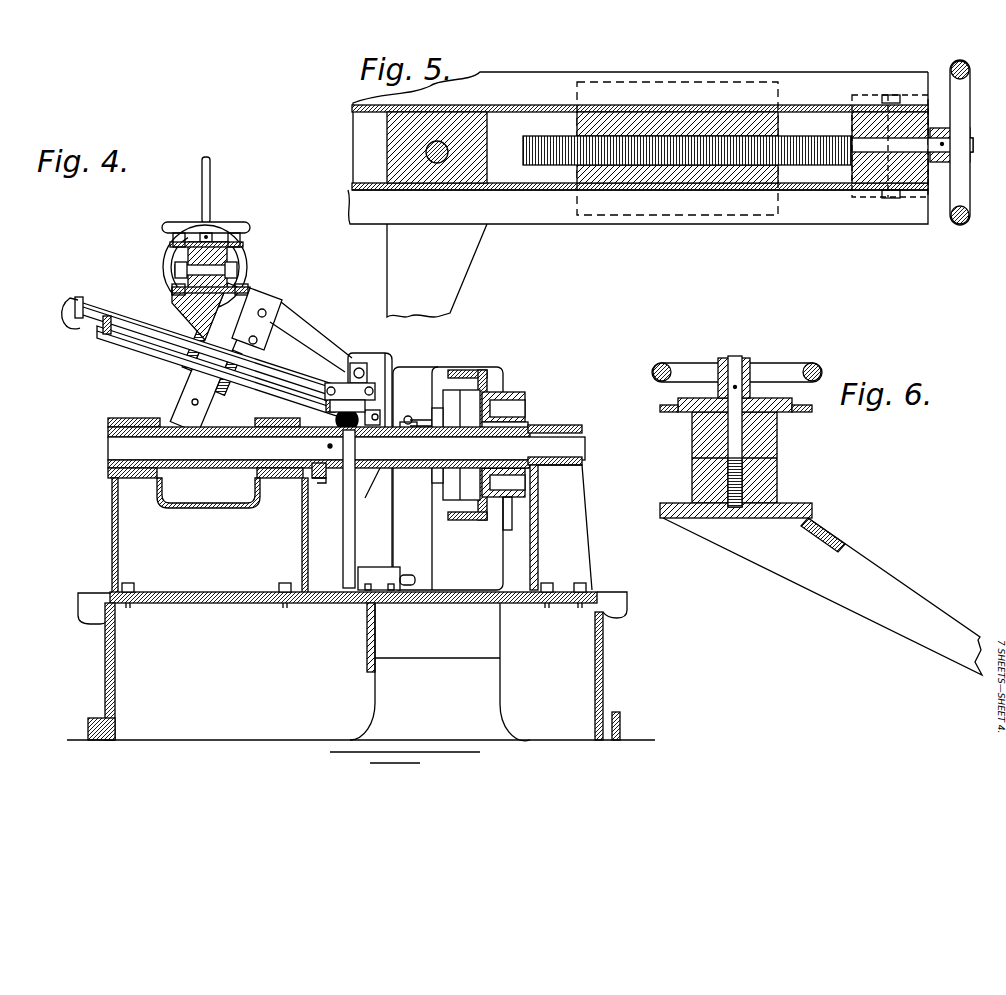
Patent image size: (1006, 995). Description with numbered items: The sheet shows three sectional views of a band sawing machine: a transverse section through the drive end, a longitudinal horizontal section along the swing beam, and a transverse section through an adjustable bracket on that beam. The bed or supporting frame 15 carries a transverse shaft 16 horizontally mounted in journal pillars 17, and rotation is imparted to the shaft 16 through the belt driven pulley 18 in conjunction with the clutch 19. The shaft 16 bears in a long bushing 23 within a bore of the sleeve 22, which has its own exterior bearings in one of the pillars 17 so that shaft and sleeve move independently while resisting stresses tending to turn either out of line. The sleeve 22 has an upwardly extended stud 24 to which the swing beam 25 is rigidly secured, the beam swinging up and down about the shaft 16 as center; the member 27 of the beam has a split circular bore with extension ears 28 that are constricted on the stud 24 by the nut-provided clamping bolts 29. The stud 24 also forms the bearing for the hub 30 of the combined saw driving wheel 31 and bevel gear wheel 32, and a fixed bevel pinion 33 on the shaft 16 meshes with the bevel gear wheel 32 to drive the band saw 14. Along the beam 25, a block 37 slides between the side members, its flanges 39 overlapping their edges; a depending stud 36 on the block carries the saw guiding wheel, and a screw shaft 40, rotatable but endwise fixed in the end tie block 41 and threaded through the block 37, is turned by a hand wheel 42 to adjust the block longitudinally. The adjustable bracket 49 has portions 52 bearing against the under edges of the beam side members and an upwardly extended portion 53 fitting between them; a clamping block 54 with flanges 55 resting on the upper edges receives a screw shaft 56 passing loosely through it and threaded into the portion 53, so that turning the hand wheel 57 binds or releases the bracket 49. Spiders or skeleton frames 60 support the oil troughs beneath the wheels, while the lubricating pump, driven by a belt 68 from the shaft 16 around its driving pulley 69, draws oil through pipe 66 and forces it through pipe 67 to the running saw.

In FIG. 4, the band saw 14 is at (73, 317).
In FIG. 4, the bed or supporting frame 15 is at (250, 601).
In FIG. 4, the transverse shaft 16 is at (346, 448).
In FIG. 4, the journal supports or pillars 17 is at (126, 478).
In FIG. 4, the belt driven pulley 18 is at (472, 372).
In FIG. 4, the clutch 19 is at (448, 478).
In FIG. 4, the sleeve 22 is at (193, 470).
In FIG. 4, the long bushing 23 is at (250, 480).
In FIG. 4, the stud 24 is at (180, 387).
In FIG. 5, the swing beam 25 is at (562, 192).
In FIG. 6, the swing beam 25 is at (778, 458).
In FIG. 4, the swing beam 25 is at (246, 270).
In FIG. 4, the member of the beam 27 is at (186, 301).
In FIG. 4, the extension ears 28 is at (280, 322).
In FIG. 4, the clamping bolts 29 is at (266, 313).
In FIG. 4, the hub 30 is at (202, 338).
In FIG. 4, the saw driving wheel 31 is at (84, 305).
In FIG. 4, the bevel gear wheel 32 is at (107, 335).
In FIG. 4, the bevel gear pinion 33 is at (320, 484).
In FIG. 5, the depending stud 36 is at (697, 119).
In FIG. 5, the block 37 is at (707, 178).
In FIG. 5, the flanges 39 is at (775, 93).
In FIG. 5, the screw shaft 40 is at (823, 158).
In FIG. 5, the end tie block 41 is at (905, 180).
In FIG. 5, the hand wheel 42 is at (955, 226).
In FIG. 4, the hand wheel 42 is at (165, 268).
In FIG. 5, the bracket 49 is at (437, 270).
In FIG. 6, the bracket 49 is at (880, 572).
In FIG. 6, the bearing portions 52 is at (790, 518).
In FIG. 5, the upwardly extended portion 53 is at (478, 171).
In FIG. 6, the upwardly extended portion 53 is at (770, 480).
In FIG. 6, the clamping block 54 is at (770, 435).
In FIG. 6, the flanges 55 is at (795, 403).
In FIG. 5, the screw shaft 56 is at (443, 149).
In FIG. 6, the screw shaft 56 is at (736, 368).
In FIG. 6, the hand wheel 57 is at (812, 363).
In FIG. 4, the hand wheel 57 is at (250, 228).
In FIG. 4, the spiders or skeleton frames 60 is at (150, 348).
In FIG. 4, the pipe 66 is at (407, 575).
In FIG. 4, the pipe 67 is at (380, 356).
In FIG. 4, the belt 68 is at (345, 527).
In FIG. 4, the driving pulley 69 is at (356, 576).